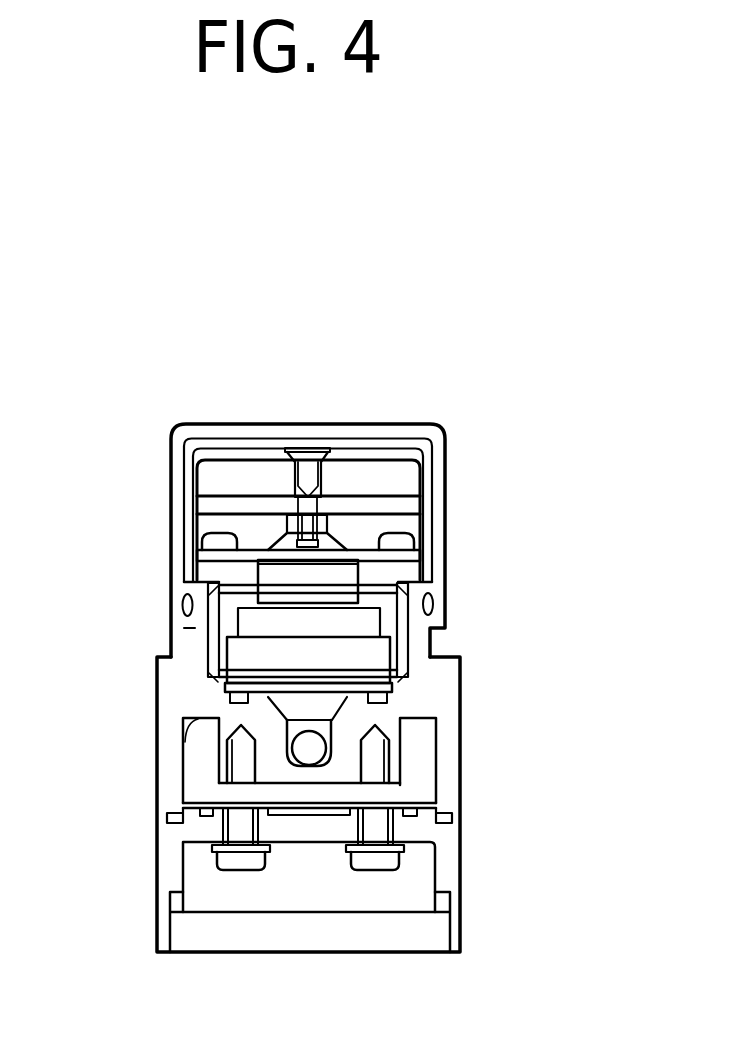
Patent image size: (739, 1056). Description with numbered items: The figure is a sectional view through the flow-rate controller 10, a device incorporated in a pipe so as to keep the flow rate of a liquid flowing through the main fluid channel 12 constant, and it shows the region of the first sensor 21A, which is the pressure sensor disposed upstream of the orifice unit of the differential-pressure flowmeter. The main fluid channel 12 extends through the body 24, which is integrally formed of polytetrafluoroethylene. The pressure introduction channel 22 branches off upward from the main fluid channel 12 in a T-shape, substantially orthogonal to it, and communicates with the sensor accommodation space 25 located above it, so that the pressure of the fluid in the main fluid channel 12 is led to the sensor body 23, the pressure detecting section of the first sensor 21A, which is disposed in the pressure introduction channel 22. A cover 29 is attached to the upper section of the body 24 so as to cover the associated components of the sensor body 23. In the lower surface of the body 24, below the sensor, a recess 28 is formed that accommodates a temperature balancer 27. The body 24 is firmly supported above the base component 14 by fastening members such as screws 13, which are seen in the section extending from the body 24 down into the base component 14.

The flow-rate controller 10 is at (505, 300).
The first sensor 21A is at (160, 400).
The cover 29 is at (357, 433).
The sensor body 23 is at (377, 648).
The sensor accommodation space 25 is at (388, 690).
The pressure introduction channel 22 is at (283, 728).
The main fluid channel 12 is at (306, 758).
The body 24 is at (448, 705).
The recess 28 is at (183, 740).
The temperature balancer 27 is at (193, 793).
The screw 13 is at (240, 862).
The base component 14 is at (447, 867).